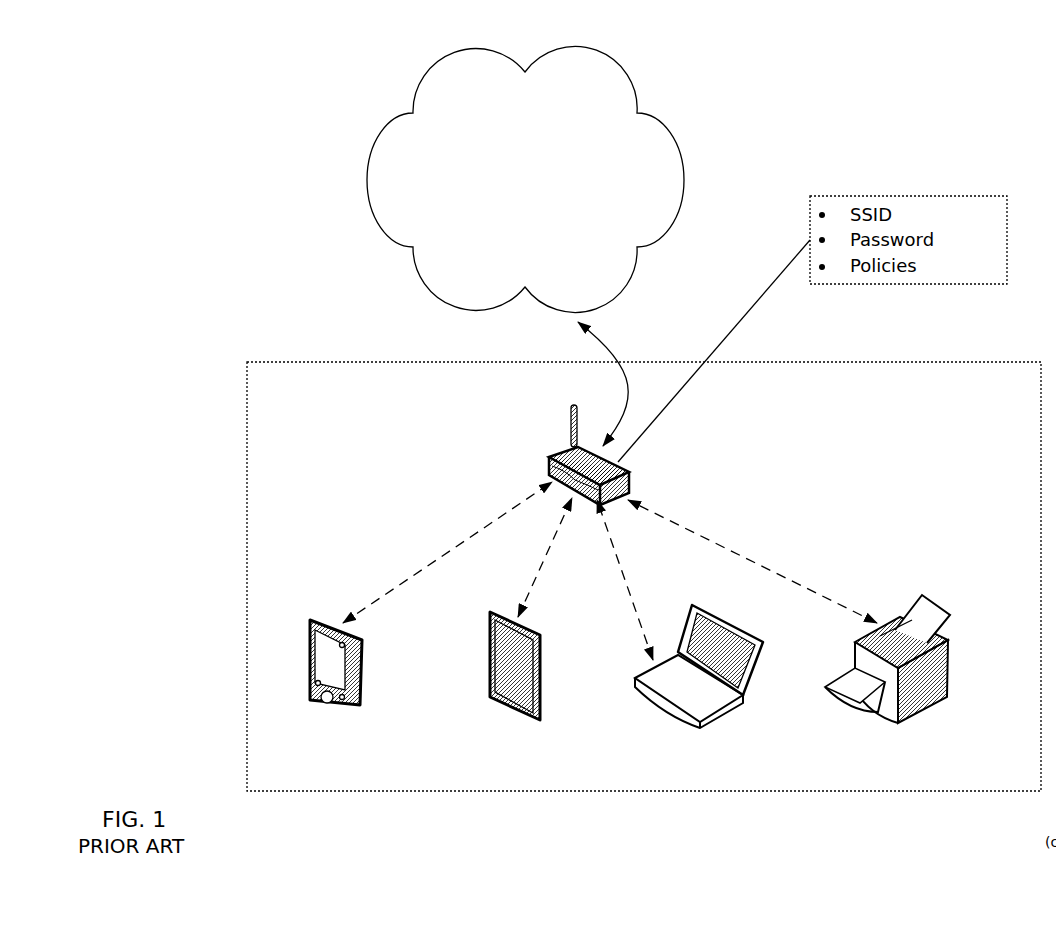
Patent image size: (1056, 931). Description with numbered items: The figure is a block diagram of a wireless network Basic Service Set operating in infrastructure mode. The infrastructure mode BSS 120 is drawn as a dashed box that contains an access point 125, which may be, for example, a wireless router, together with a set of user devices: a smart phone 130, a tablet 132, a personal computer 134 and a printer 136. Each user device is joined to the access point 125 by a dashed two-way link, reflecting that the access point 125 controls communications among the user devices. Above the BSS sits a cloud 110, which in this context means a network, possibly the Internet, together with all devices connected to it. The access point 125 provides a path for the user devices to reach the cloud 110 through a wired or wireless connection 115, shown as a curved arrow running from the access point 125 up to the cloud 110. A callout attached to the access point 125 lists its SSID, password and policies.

The cloud 110 is at (525, 179).
The wired or wireless connection 115 is at (607, 345).
The infrastructure mode BSS 120 is at (644, 576).
The access point 125 is at (549, 457).
The smart phone 130 is at (347, 713).
The tablet 132 is at (520, 717).
The personal computer 134 is at (718, 718).
The printer 136 is at (918, 717).